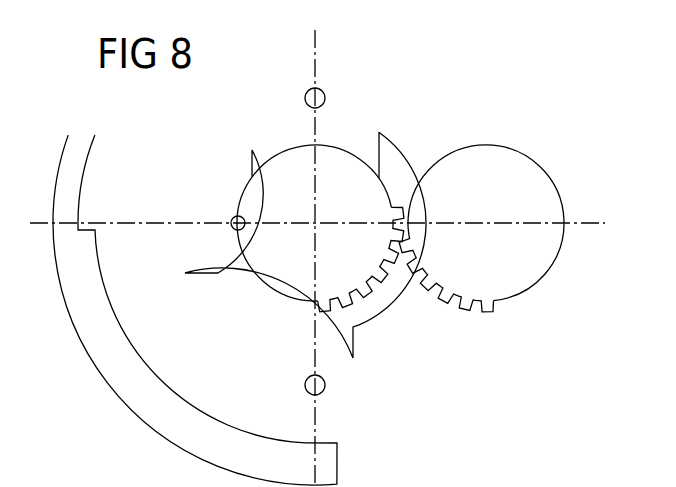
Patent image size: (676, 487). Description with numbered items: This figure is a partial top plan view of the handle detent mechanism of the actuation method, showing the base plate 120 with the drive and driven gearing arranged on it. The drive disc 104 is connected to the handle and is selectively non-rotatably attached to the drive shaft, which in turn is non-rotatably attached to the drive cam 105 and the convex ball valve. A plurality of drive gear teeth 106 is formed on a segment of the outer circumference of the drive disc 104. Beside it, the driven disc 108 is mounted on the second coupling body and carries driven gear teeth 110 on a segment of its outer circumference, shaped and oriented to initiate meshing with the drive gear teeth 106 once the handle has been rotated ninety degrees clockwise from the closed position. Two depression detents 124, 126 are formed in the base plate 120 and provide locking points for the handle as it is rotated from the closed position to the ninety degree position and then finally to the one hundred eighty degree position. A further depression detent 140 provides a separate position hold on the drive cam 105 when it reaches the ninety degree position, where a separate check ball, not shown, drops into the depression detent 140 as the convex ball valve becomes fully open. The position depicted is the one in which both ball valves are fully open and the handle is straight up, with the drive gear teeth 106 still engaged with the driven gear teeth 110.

The drive disc 104 is at (327, 153).
The drive cam 105 is at (390, 150).
The drive gear teeth 106 is at (362, 324).
The driven disc 108 is at (527, 173).
The driven gear teeth 110 is at (487, 312).
The base plate 120 is at (223, 389).
The depression detent 124 is at (318, 93).
The depression detent 126 is at (323, 383).
The depression detent 140 is at (234, 217).